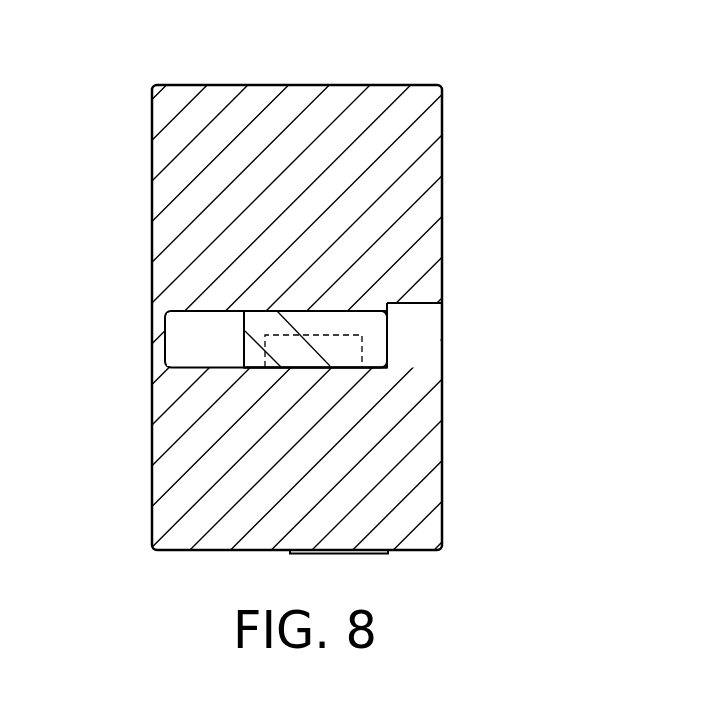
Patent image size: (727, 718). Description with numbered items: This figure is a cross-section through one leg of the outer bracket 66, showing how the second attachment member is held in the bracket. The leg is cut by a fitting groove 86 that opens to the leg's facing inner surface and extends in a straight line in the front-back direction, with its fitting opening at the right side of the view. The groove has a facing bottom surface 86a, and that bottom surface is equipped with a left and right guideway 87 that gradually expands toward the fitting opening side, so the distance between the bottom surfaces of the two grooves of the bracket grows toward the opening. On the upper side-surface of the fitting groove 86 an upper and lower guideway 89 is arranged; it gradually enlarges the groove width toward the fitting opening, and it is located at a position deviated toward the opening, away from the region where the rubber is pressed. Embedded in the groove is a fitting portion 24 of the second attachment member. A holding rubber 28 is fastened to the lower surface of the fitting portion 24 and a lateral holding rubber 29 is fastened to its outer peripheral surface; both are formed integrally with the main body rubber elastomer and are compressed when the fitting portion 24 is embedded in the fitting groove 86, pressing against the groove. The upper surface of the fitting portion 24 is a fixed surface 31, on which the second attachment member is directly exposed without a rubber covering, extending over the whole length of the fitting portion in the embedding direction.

The outer bracket 66 is at (323, 47).
The fitting groove 86 is at (200, 312).
The facing bottom surface 86a is at (198, 345).
The left and right guideway 87 is at (425, 338).
The upper and lower guideway 89 is at (423, 305).
The fitting portion 24 is at (327, 313).
The holding rubber 28 is at (303, 368).
The lateral holding rubber 29 is at (330, 340).
The fixed surface 31 is at (277, 311).